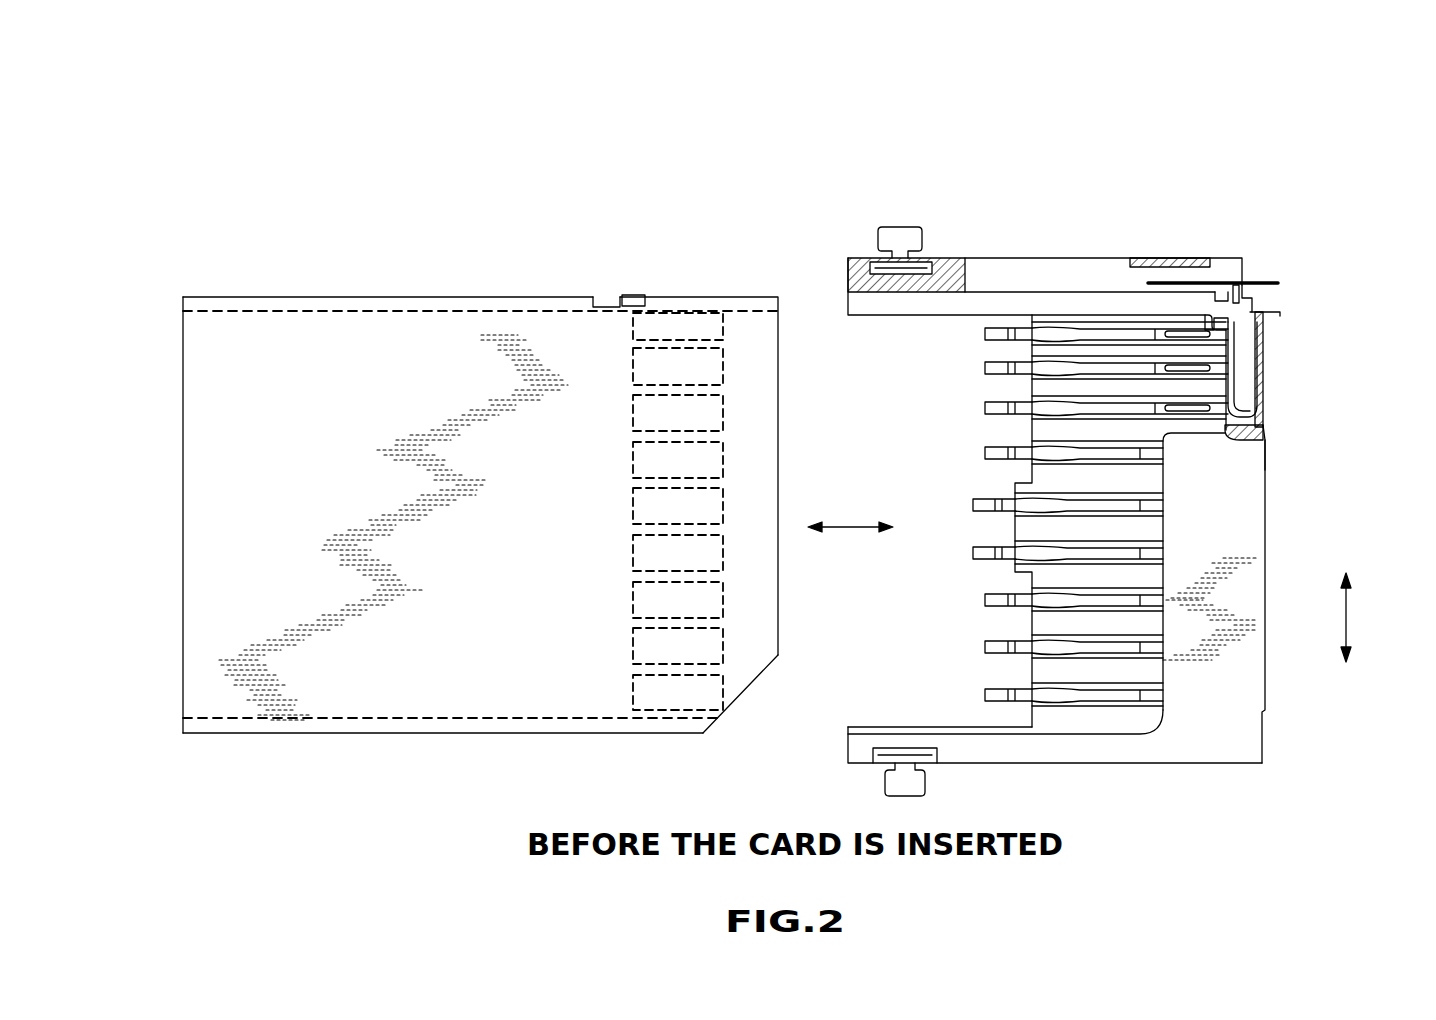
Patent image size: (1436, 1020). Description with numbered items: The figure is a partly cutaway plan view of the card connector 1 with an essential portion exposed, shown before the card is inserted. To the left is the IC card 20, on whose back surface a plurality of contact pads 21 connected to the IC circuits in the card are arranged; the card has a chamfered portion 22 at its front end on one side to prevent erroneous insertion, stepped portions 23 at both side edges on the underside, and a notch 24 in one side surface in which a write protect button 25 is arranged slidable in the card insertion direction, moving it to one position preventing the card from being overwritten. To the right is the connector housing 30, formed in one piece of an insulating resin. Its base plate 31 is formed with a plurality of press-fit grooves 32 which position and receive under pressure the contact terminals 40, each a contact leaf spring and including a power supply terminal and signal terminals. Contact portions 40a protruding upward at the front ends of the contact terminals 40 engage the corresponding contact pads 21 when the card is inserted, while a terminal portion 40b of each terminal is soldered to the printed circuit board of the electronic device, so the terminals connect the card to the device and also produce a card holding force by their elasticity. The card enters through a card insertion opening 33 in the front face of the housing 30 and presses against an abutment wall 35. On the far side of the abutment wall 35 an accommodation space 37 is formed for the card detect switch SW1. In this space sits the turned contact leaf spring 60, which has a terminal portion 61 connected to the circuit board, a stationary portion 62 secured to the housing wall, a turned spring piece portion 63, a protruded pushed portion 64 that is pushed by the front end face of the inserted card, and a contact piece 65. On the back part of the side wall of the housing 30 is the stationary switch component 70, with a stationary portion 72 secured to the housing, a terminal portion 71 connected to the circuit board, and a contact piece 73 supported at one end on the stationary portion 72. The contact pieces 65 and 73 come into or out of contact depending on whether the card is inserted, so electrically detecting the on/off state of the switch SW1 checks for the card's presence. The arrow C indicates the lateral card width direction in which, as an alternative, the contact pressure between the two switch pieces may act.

The card connector 1 is at (1213, 172).
The IC card 20 is at (490, 322).
The contact pads 21 is at (708, 368).
The chamfered portion 22 is at (737, 700).
The stepped portions 23 is at (436, 300).
The notch 24 is at (604, 298).
The write protect button 25 is at (636, 295).
The connector housing 30 is at (1258, 684).
The base plate 31 is at (1030, 530).
The press-fit grooves 32 is at (1040, 562).
The card insertion opening 33 is at (900, 572).
The abutment wall 35 is at (1218, 413).
The accommodation space 37 is at (1245, 387).
The contact terminals 40 is at (1045, 406).
The contact portions 40a is at (1184, 420).
The terminal portion 40b is at (980, 499).
The contact leaf spring 60 is at (1264, 432).
The terminal portion 61 is at (1276, 312).
The stationary portion 62 is at (1263, 358).
The turned spring piece portion 63 is at (1265, 441).
The protruded pushed portion 64 is at (1212, 320).
The contact piece 65 is at (1208, 290).
The stationary switch component 70 is at (1200, 308).
The terminal portion 71 is at (1283, 262).
The stationary portion 72 is at (1236, 283).
The contact piece 73 is at (1250, 280).
The card detect switch SW1 is at (1298, 255).
The arrow C is at (1354, 617).